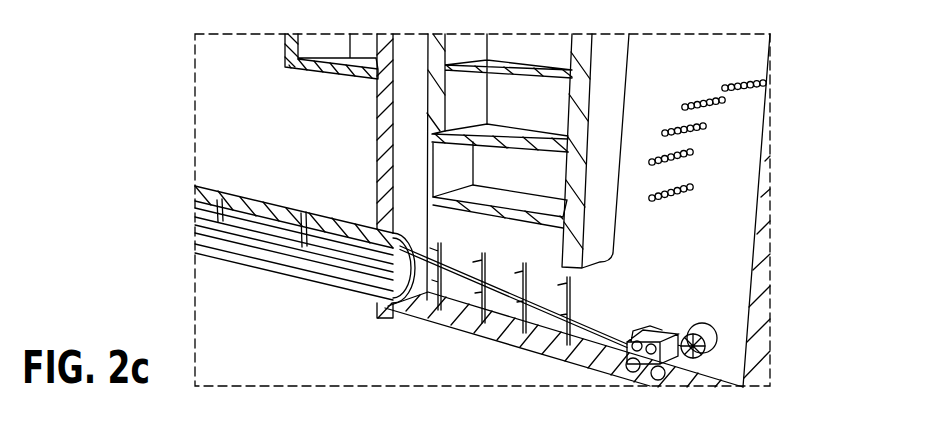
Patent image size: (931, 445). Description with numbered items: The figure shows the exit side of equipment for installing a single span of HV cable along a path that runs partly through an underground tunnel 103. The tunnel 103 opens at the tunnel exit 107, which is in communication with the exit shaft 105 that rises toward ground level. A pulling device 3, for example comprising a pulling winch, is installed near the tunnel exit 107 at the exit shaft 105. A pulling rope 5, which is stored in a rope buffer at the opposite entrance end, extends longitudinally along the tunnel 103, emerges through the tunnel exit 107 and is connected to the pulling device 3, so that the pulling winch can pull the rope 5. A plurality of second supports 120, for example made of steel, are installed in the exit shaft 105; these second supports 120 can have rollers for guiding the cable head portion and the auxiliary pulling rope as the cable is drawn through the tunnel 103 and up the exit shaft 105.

The pulling device 3 is at (717, 328).
The pulling rope 5 is at (238, 208).
The tunnel 103 is at (217, 235).
The exit shaft 105 is at (693, 255).
The tunnel exit 107 is at (396, 282).
The second supports 120 is at (690, 153).